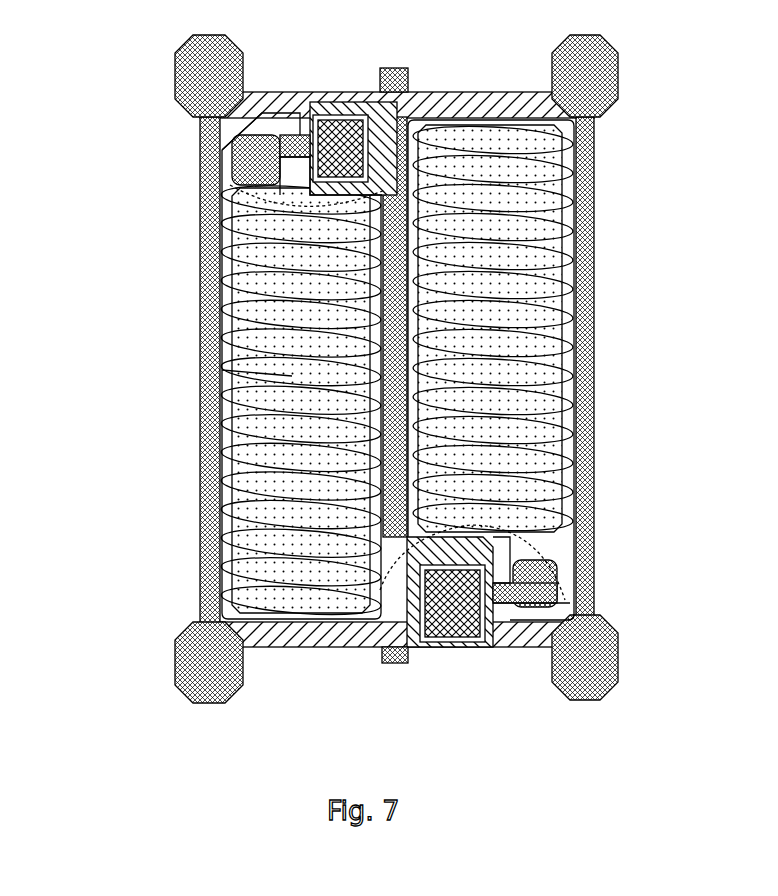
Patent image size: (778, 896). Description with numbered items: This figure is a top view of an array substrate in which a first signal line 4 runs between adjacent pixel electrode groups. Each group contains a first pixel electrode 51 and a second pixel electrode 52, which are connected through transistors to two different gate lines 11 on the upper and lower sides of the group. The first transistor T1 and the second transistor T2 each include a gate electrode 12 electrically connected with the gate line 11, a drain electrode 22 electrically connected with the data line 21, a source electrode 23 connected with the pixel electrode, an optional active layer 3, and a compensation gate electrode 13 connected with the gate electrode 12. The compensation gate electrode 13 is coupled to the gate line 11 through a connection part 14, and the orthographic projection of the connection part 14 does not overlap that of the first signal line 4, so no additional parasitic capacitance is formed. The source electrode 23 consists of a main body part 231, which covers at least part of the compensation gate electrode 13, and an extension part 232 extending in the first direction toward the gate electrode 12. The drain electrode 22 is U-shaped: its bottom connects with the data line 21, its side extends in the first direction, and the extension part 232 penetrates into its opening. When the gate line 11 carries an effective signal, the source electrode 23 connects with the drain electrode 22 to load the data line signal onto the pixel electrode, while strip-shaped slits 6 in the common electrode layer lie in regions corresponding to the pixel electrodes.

The gate line 11 is at (470, 103).
The gate electrode 12 is at (293, 137).
The compensation gate electrode 13 is at (394, 371).
The connection part 14 is at (222, 130).
The data line 21 is at (398, 68).
The drain electrode 22 is at (347, 110).
The source electrode 23 is at (353, 371).
The main body part 231 is at (245, 170).
The extension part 232 is at (290, 151).
The active layer 3 is at (316, 105).
The first signal line 4 is at (208, 330).
The first pixel electrode 51 is at (290, 375).
The second pixel electrode 52 is at (475, 325).
The strip-shaped slits 6 is at (572, 460).
The first transistor T1 is at (300, 201).
The second transistor T2 is at (541, 546).